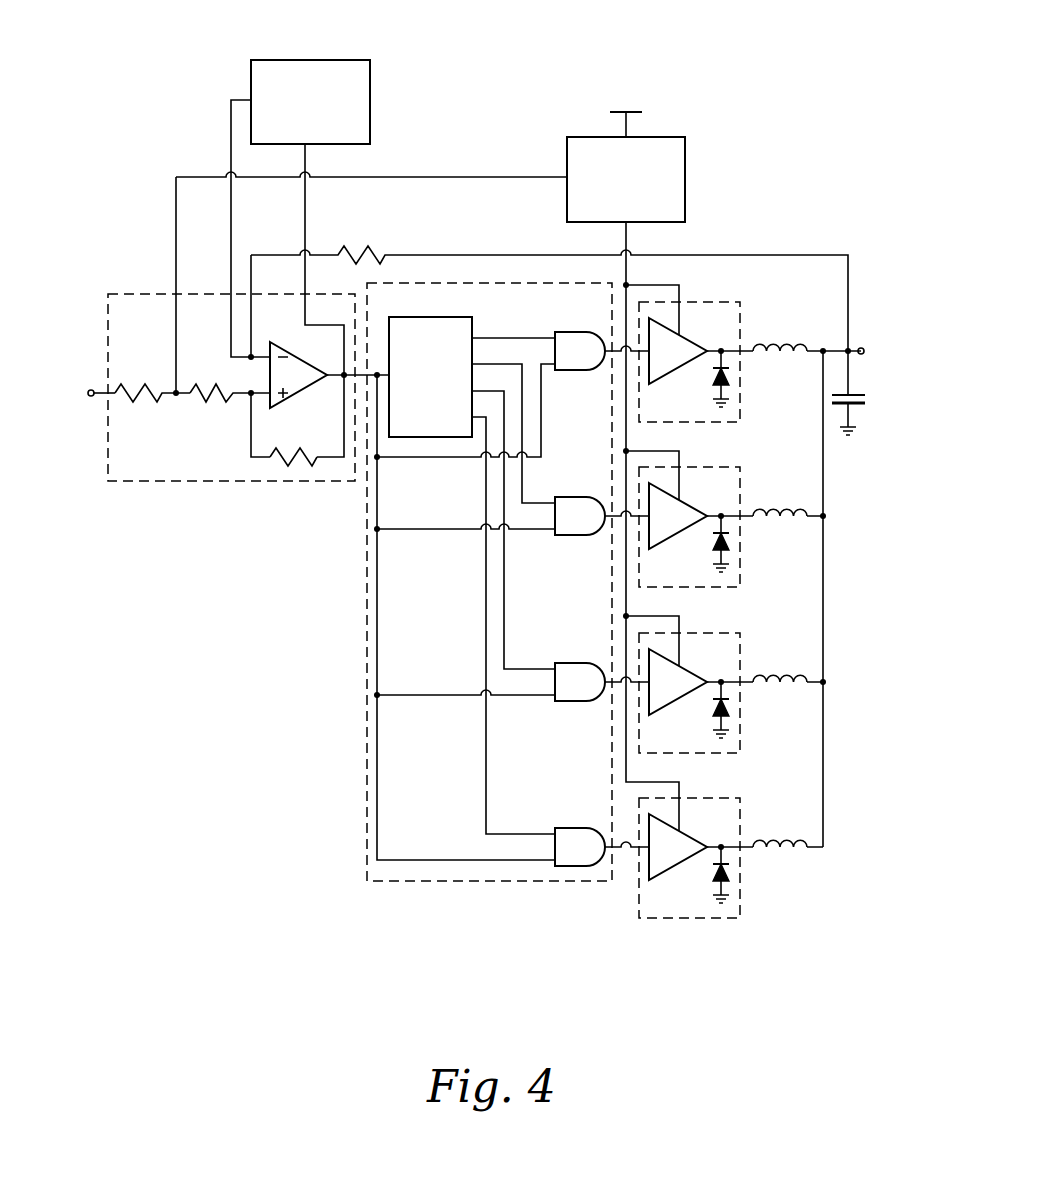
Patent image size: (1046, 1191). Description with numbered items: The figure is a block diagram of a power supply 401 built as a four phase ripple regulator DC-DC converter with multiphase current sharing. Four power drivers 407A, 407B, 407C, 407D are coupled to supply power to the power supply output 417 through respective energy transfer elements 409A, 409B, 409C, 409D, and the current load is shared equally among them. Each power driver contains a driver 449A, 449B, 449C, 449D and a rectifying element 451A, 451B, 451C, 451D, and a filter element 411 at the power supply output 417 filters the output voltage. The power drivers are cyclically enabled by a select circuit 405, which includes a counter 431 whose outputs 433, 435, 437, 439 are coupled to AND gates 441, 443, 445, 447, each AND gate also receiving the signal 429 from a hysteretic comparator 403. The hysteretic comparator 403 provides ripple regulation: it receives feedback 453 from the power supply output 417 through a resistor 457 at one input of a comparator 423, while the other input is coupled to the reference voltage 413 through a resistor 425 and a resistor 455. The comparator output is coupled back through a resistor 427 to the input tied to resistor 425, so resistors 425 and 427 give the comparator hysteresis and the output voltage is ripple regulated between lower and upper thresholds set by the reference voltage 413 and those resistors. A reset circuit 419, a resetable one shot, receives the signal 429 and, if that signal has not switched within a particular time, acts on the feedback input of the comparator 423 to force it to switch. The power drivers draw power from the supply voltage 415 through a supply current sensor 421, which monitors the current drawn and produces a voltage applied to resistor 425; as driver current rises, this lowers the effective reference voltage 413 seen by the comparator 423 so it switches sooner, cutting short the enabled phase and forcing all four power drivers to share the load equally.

The power supply 401 is at (801, 167).
The hysteretic comparator 403 is at (212, 483).
The select circuit 405 is at (365, 853).
The power driver 407A is at (742, 417).
The power driver 407B is at (742, 582).
The power driver 407C is at (742, 748).
The power driver 407D is at (742, 913).
The energy transfer element 409A is at (789, 343).
The energy transfer element 409B is at (789, 508).
The energy transfer element 409C is at (789, 674).
The energy transfer element 409D is at (789, 839).
The filter element 411 is at (860, 406).
The reference voltage 413 is at (65, 379).
The supply voltage 415 is at (632, 92).
The power supply output 417 is at (858, 346).
The reset circuit 419 is at (315, 59).
The supply current sensor 421 is at (685, 183).
The comparator 423 is at (290, 398).
The resistor 425 is at (217, 400).
The resistor 427 is at (297, 470).
The signal 429 is at (333, 371).
The counter 431 is at (452, 317).
The counter output 433 is at (492, 336).
The counter output 435 is at (520, 362).
The counter output 437 is at (505, 410).
The counter output 439 is at (487, 436).
The AND gate 441 is at (590, 372).
The AND gate 443 is at (578, 538).
The AND gate 445 is at (578, 704).
The AND gate 447 is at (578, 868).
The driver 449A is at (692, 340).
The driver 449B is at (706, 494).
The driver 449C is at (706, 660).
The driver 449D is at (706, 825).
The rectifying element 451A is at (712, 380).
The rectifying element 451B is at (712, 545).
The rectifying element 451C is at (712, 711).
The rectifying element 451D is at (712, 876).
The feedback 453 is at (815, 255).
The resistor 455 is at (145, 400).
The resistor 457 is at (365, 252).